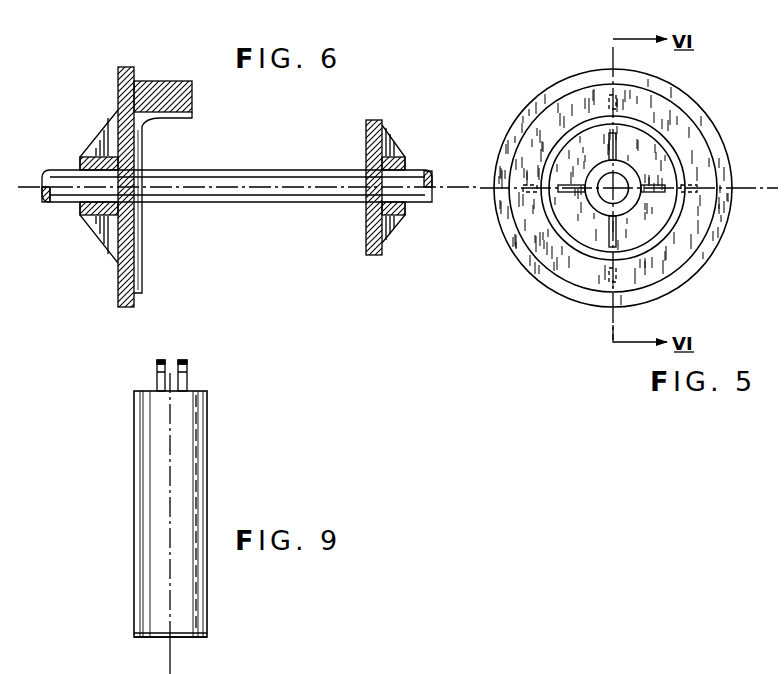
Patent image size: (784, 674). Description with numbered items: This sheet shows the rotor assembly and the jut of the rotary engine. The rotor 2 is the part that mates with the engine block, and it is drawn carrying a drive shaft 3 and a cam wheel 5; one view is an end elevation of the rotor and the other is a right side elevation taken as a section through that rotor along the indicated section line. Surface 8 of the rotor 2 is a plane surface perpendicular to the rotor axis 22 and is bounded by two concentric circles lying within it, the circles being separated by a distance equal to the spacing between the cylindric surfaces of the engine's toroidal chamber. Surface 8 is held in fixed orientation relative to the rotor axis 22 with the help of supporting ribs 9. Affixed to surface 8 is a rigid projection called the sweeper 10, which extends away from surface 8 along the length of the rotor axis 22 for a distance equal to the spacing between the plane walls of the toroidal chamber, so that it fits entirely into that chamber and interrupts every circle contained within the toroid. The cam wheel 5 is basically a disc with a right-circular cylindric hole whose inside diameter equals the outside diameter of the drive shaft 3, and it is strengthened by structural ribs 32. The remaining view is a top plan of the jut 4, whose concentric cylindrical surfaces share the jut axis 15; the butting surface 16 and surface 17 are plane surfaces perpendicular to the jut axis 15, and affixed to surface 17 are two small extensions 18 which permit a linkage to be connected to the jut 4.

In FIG. 6, the rotor 2 is at (122, 66).
In FIG. 5, the rotor 2 is at (567, 80).
In FIG. 6, the drive shaft 3 is at (186, 171).
In FIG. 9, the jut 4 is at (193, 451).
In FIG. 6, the cam wheel 5 is at (366, 130).
In FIG. 5, the cam wheel 5 is at (662, 150).
In FIG. 6, the surface 8 is at (143, 274).
In FIG. 5, the surface 8 is at (538, 159).
In FIG. 6, the supporting ribs 9 is at (96, 142).
In FIG. 6, the sweeper 10 is at (150, 82).
In FIG. 9, the jut axis 15 is at (170, 659).
In FIG. 9, the butting surface 16 is at (184, 640).
In FIG. 9, the surface 17 is at (197, 393).
In FIG. 9, the small extensions 18 is at (185, 360).
In FIG. 6, the rotor axis 22 is at (476, 180).
In FIG. 6, the structural ribs 32 is at (398, 146).